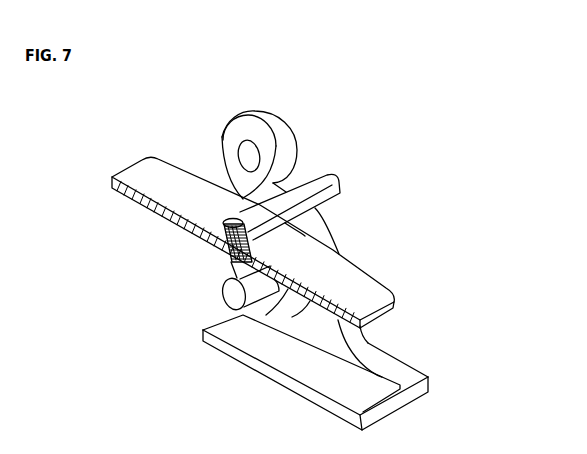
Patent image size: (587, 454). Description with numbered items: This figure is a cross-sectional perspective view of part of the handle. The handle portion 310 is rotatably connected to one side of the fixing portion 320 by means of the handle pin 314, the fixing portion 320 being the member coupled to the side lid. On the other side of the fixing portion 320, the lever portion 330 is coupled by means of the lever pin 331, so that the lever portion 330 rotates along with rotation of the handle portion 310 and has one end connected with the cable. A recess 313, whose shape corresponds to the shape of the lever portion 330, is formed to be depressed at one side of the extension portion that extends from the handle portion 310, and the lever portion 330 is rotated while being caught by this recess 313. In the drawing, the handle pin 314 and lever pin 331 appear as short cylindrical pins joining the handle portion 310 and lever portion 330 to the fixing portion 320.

The handle portion 310 is at (295, 371).
The recess 313 is at (297, 153).
The handle pin 314 is at (221, 296).
The fixing portion 320 is at (352, 280).
The lever portion 330 is at (334, 175).
The lever pin 331 is at (228, 247).